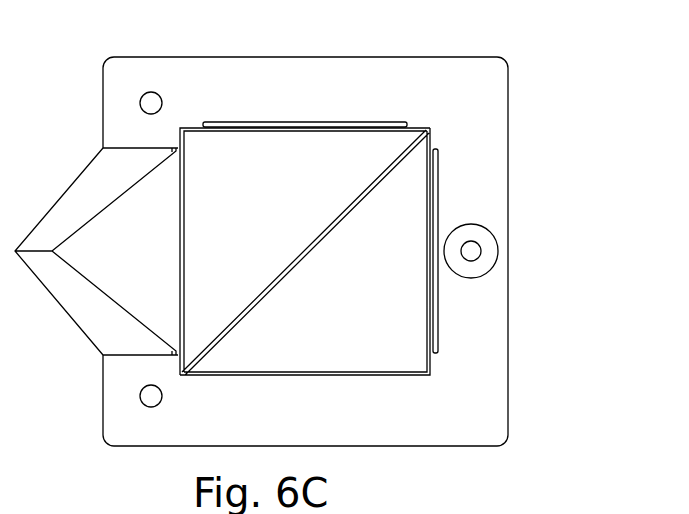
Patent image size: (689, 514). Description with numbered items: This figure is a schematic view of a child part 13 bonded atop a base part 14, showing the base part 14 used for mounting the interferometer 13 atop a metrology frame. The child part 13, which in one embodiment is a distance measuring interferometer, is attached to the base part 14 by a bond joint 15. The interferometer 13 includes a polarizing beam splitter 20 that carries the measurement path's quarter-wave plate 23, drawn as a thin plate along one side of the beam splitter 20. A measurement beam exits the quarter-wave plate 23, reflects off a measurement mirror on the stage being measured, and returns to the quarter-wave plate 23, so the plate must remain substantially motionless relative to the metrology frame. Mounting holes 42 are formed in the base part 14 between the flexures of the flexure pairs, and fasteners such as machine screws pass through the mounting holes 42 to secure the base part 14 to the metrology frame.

The child part 13 is at (304, 228).
The base part 14 is at (508, 170).
The bond joint 15 is at (397, 294).
The polarizing beam splitter 20 is at (398, 145).
The quarter-wave plate 23 is at (438, 192).
The mounting holes 42 is at (141, 105).